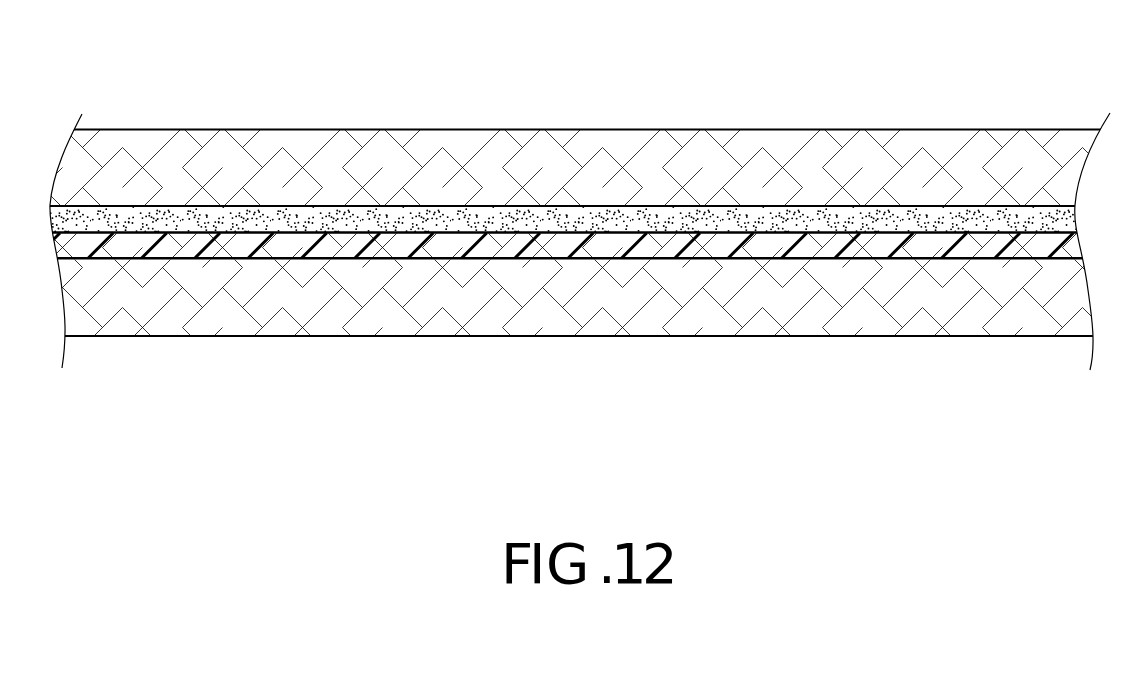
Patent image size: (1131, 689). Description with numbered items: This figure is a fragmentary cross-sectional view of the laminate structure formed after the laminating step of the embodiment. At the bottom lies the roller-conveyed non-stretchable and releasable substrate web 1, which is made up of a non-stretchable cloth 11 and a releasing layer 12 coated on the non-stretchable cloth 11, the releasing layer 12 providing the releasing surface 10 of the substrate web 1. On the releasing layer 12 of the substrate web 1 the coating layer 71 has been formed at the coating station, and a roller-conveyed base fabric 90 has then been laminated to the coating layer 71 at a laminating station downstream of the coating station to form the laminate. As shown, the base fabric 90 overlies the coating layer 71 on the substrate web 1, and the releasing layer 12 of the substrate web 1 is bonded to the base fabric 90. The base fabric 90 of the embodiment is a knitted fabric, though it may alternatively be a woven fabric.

The non-stretchable and releasable substrate web 1 is at (960, 357).
The base fabric 90 is at (822, 158).
The coating layer 71 is at (283, 218).
The releasing surface 10 is at (515, 230).
The releasing layer 12 is at (648, 242).
The non-stretchable cloth 11 is at (775, 313).